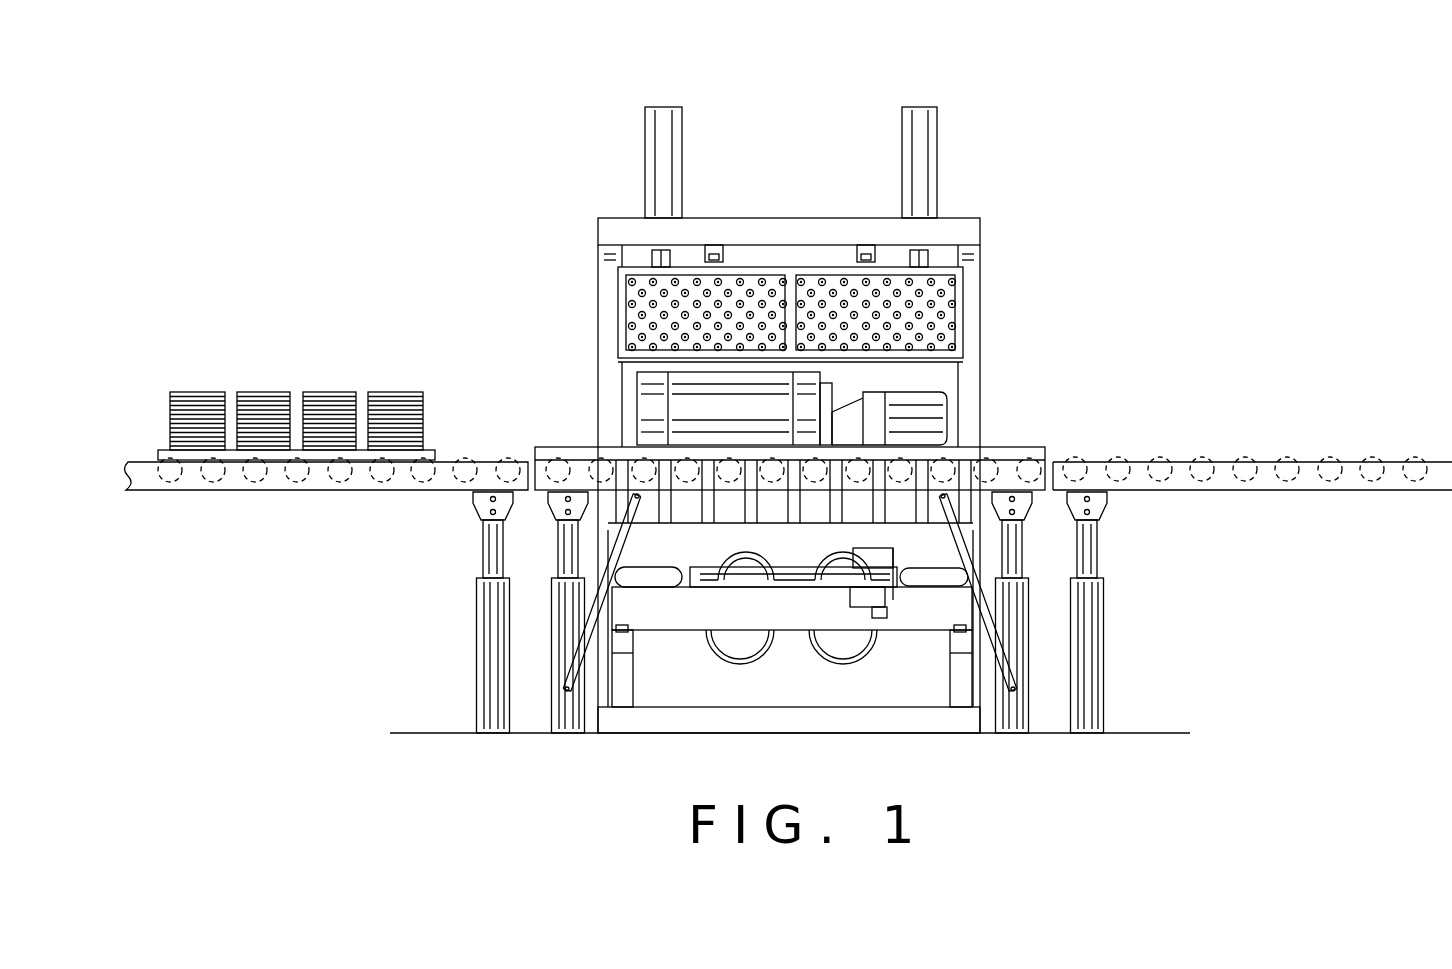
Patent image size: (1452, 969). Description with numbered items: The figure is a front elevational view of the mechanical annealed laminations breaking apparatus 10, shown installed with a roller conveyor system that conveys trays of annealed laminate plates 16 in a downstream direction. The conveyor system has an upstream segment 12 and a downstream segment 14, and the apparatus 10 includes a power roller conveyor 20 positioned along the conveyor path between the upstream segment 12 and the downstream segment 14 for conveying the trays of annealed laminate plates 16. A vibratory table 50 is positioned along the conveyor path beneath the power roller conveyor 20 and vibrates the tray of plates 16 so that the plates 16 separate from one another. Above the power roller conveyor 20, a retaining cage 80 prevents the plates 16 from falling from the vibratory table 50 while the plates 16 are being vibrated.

The mechanical annealed laminations breaking apparatus 10 is at (552, 217).
The upstream segment of the conveyor system 12 is at (298, 507).
The downstream segment of the conveyor system 14 is at (1252, 503).
The annealed laminate plates 16 is at (438, 416).
The power roller conveyor 20 is at (1020, 447).
The vibratory table 50 is at (690, 546).
The retaining cage 80 is at (808, 280).